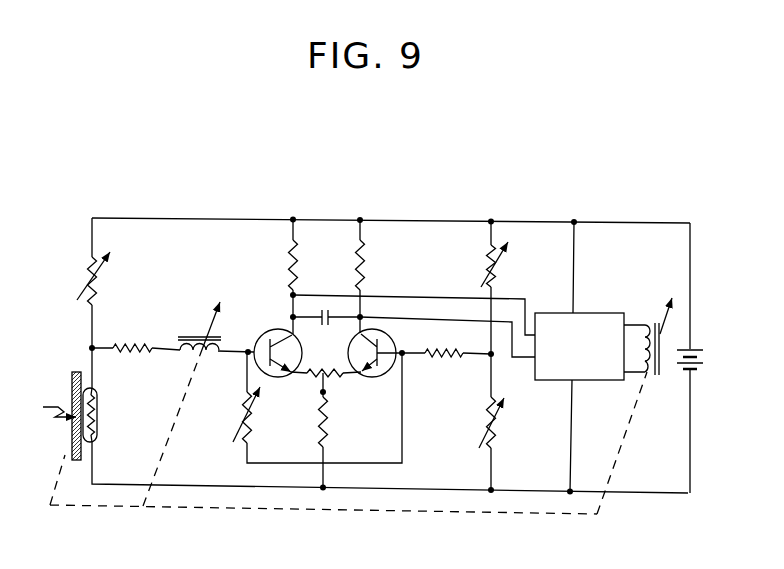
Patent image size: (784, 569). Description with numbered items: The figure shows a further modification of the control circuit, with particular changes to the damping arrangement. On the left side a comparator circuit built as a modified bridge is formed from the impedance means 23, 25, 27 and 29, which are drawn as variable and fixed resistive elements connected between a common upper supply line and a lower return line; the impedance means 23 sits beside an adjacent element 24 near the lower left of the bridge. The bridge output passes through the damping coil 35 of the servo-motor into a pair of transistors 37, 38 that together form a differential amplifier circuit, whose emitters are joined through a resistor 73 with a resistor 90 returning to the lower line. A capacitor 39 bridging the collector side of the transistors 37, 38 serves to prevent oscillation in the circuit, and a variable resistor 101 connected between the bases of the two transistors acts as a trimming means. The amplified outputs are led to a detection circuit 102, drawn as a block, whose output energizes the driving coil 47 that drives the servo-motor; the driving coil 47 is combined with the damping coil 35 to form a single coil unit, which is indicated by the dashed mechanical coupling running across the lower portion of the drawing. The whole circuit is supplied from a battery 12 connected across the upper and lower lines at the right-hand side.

The battery 12 is at (701, 350).
The impedance means 23 is at (97, 415).
The heat transfer member 24 is at (73, 446).
The impedance means 25 is at (98, 292).
The impedance means 27 is at (497, 425).
The impedance means 29 is at (497, 268).
The damping coil 35 is at (192, 338).
The transistor 37 is at (268, 333).
The transistor 38 is at (376, 377).
The capacitor 39 is at (331, 324).
The driving coil 47 is at (645, 328).
The resistor 73 is at (325, 363).
The resistor 90 is at (328, 428).
The variable resistor 101 is at (250, 428).
The detection circuit 102 is at (588, 364).